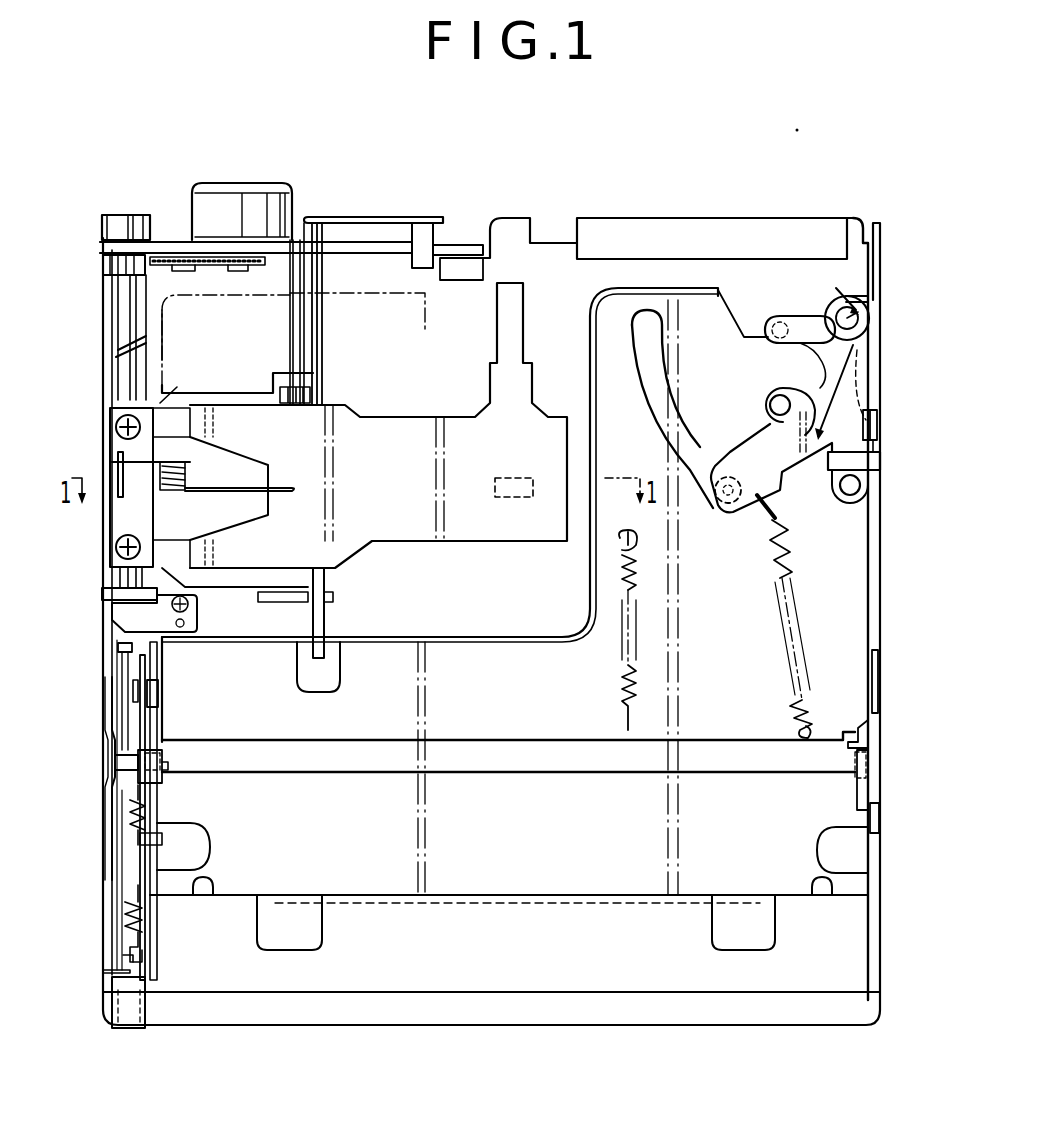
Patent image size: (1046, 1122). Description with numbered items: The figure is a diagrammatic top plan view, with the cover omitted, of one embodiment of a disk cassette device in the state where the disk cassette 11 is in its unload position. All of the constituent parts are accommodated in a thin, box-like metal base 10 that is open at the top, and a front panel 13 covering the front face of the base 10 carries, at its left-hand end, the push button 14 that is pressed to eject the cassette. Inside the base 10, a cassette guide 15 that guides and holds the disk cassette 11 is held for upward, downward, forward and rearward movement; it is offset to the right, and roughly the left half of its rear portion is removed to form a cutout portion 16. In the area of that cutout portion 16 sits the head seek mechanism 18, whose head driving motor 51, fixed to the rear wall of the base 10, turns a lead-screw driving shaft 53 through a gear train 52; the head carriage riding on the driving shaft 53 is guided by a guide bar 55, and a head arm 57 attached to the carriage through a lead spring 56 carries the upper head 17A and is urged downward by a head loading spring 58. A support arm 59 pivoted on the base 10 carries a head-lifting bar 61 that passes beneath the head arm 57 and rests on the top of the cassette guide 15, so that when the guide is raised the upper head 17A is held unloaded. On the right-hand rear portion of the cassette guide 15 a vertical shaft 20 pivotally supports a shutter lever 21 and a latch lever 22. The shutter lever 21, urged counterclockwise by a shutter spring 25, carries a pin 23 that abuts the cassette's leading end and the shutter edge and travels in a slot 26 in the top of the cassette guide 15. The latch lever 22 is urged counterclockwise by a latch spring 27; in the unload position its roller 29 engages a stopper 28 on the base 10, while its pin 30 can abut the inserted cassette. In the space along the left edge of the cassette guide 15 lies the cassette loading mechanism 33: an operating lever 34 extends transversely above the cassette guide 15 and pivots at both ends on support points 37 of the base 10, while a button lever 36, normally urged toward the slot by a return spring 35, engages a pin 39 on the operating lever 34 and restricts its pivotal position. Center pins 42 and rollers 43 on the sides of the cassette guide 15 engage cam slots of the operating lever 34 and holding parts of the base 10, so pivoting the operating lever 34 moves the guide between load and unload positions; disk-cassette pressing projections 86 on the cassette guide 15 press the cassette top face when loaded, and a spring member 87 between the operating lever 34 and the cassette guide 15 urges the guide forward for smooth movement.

The base 10 is at (875, 972).
The disk cassette 11 is at (378, 290).
The front panel 13 is at (600, 998).
The push button (eject button) 14 is at (135, 1035).
The cassette guide 15 is at (533, 900).
The cutout portion 16 is at (505, 636).
The upper head 17A is at (514, 476).
The head seek mechanism 18 is at (240, 386).
The vertical shaft 20 is at (822, 305).
The shutter lever 21 is at (752, 448).
The latch lever 22 is at (820, 348).
The pin 23 is at (727, 508).
The shutter spring 25 is at (788, 628).
The slot 26 is at (652, 362).
The latch spring 27 is at (766, 440).
The stopper 28 is at (834, 470).
The roller 29 is at (850, 493).
The pin 30 is at (775, 325).
The cassette loading mechanism 33 is at (180, 755).
The operating lever 34 is at (470, 775).
The return spring 35 is at (160, 790).
The button lever 36 is at (148, 862).
The support points 37 is at (182, 775).
The pin 39 is at (135, 745).
The center pins 42 is at (155, 690).
The rollers 43 is at (878, 437).
The head driving motor 51 is at (220, 205).
The gear train 52 is at (170, 272).
The driving shaft 53 is at (122, 318).
The guide bar 55 is at (300, 316).
The lead spring 56 is at (173, 410).
The head arm 57 is at (418, 440).
The head loading spring 58 is at (195, 465).
The support arm 59 is at (348, 214).
The bar 61 is at (320, 362).
The disk-cassette pressing projections 86 is at (205, 895).
The spring member 87 is at (625, 665).